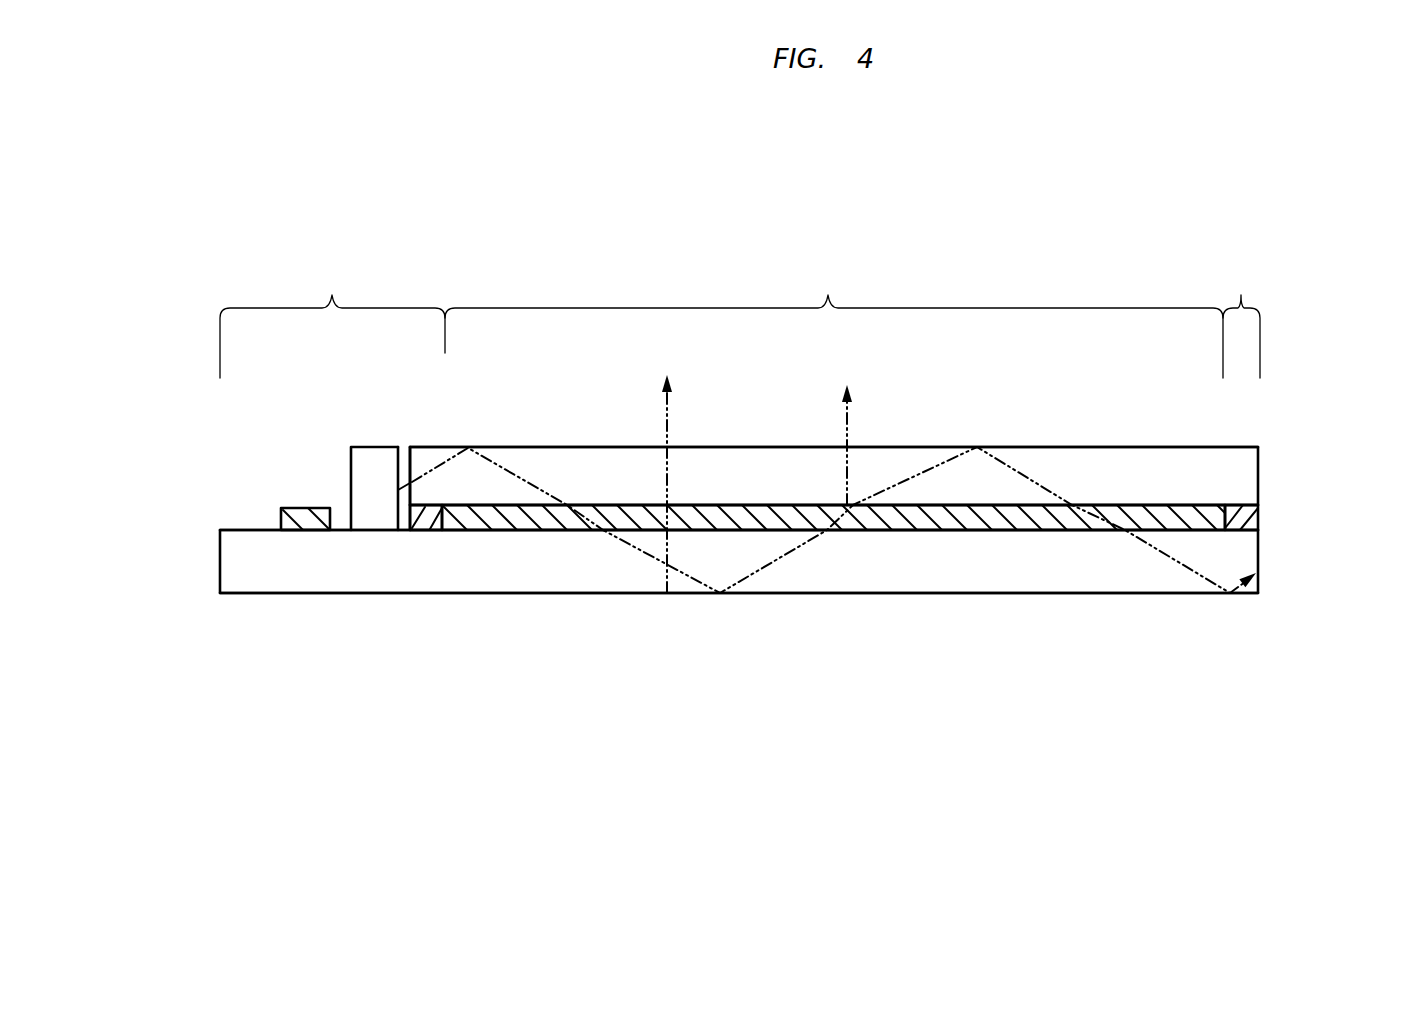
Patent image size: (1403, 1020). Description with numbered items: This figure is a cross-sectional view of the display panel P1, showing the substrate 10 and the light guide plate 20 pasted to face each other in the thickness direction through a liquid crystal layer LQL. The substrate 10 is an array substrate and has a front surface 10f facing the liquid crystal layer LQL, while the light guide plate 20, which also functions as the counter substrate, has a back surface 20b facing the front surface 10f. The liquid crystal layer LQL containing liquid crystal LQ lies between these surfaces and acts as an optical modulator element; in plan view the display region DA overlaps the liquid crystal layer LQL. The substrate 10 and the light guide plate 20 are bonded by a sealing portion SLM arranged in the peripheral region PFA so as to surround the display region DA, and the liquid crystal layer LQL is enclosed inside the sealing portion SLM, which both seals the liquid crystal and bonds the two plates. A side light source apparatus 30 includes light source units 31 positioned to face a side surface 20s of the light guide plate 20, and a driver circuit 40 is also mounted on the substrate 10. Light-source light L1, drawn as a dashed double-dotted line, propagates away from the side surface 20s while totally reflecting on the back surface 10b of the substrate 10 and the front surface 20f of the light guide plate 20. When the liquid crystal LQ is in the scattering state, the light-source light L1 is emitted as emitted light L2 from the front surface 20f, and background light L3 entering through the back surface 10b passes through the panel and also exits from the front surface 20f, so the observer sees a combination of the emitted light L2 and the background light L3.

The display panel P1 is at (1003, 223).
The substrate 10 is at (1233, 563).
The front surface 10f is at (913, 518).
The back surface 10b is at (971, 607).
The light guide plate 20 is at (1233, 470).
The front surface 20f is at (951, 433).
The back surface 20b is at (717, 519).
The side surface 20s is at (392, 462).
The side light source apparatus 30 is at (400, 553).
The light source unit 31 is at (382, 508).
The driver circuit 40 is at (307, 527).
The sealing portion SLM is at (428, 522).
The liquid crystal layer LQL is at (829, 583).
The liquid crystal LQ is at (1074, 520).
The light-source light L1 is at (530, 490).
The emitted light L2 is at (847, 468).
The background light L3 is at (667, 434).
The peripheral region PFA is at (745, 315).
The display region DA is at (834, 315).